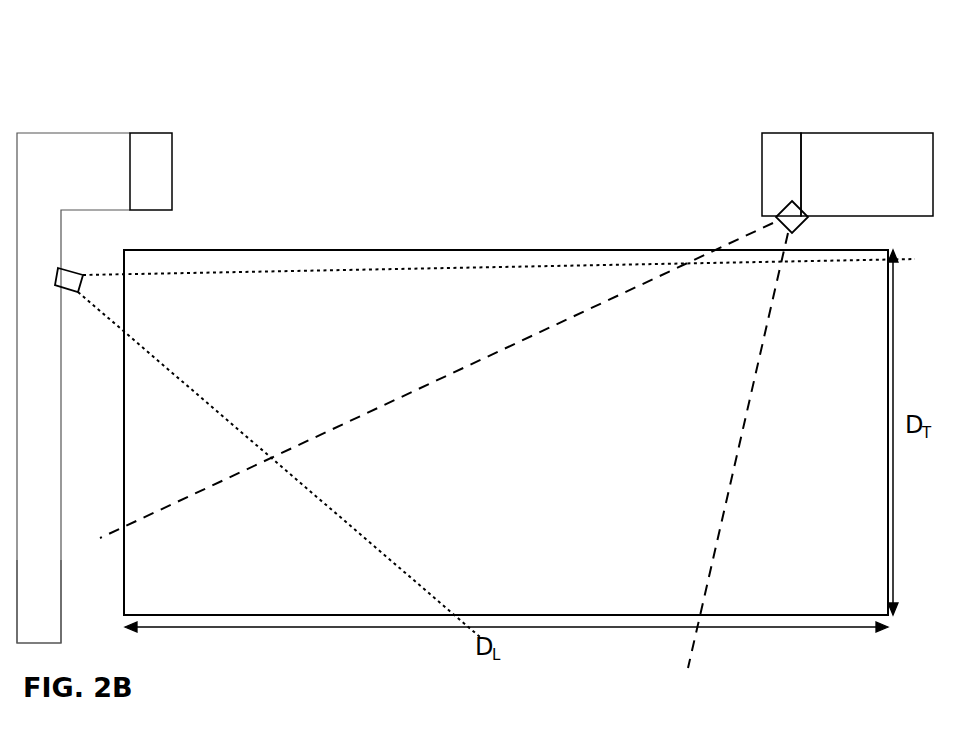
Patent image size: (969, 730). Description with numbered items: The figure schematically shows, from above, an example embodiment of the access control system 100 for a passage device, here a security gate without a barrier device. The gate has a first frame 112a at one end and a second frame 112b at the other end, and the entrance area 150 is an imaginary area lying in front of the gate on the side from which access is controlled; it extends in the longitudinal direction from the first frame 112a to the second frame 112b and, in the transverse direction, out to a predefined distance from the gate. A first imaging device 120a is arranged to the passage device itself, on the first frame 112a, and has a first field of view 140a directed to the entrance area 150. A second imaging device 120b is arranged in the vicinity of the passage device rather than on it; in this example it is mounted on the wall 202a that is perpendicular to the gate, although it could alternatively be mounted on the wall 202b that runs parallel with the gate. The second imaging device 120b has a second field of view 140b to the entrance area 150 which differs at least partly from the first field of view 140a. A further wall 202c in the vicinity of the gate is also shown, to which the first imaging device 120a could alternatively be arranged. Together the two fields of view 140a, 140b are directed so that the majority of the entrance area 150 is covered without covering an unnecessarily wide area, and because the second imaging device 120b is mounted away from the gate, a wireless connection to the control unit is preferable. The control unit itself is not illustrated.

The access control system 100 is at (830, 34).
The wall 202b is at (35, 133).
The wall 202a is at (61, 598).
The wall 202c is at (882, 133).
The second frame 112b is at (160, 133).
The first frame 112a is at (776, 133).
The second imaging device 120b is at (78, 294).
The first imaging device 120a is at (800, 212).
The second field of view 140b is at (328, 505).
The first field of view 140a is at (745, 410).
The entrance area 150 is at (762, 615).